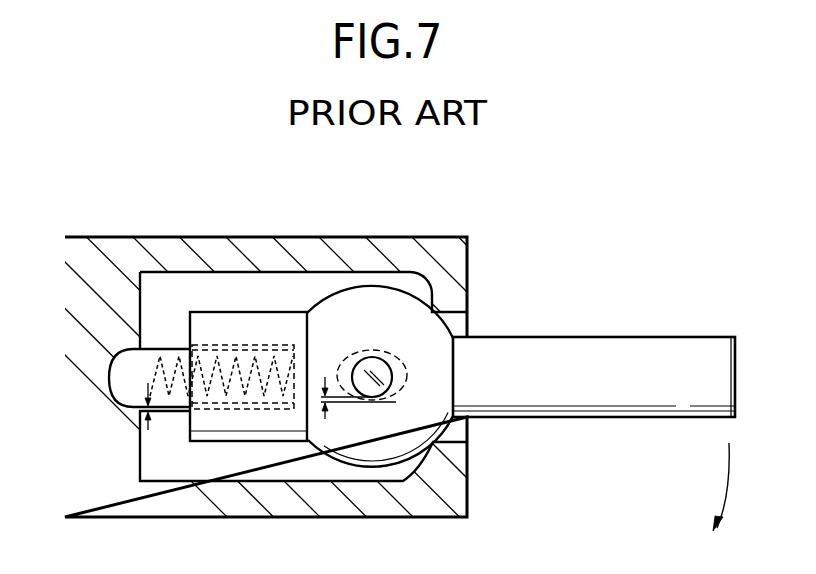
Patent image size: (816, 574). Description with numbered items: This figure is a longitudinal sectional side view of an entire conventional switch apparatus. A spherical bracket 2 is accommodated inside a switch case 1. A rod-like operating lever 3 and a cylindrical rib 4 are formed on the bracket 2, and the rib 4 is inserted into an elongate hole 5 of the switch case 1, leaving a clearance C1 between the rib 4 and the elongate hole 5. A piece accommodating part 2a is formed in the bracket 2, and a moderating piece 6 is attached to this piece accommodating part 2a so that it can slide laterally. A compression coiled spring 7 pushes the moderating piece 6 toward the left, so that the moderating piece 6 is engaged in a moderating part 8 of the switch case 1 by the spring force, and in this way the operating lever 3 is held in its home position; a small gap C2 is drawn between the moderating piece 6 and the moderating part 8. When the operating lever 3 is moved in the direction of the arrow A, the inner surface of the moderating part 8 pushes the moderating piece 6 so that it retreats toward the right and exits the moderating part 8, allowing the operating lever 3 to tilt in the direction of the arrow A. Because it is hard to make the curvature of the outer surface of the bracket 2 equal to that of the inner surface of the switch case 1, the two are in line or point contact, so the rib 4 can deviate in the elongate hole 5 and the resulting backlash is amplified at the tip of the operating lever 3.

The switch case 1 is at (300, 237).
The spherical bracket 2 is at (366, 469).
The piece accommodating part 2a is at (245, 443).
The operating lever 3 is at (576, 337).
The cylindrical rib 4 is at (372, 357).
The elongate hole 5 is at (403, 356).
The moderating piece 6 is at (177, 347).
The compression coiled spring 7 is at (223, 358).
The moderating part 8 is at (112, 394).
The clearance C1 is at (358, 410).
The clearance between plunger and housing opening C2 is at (165, 416).
The arrow A is at (715, 503).